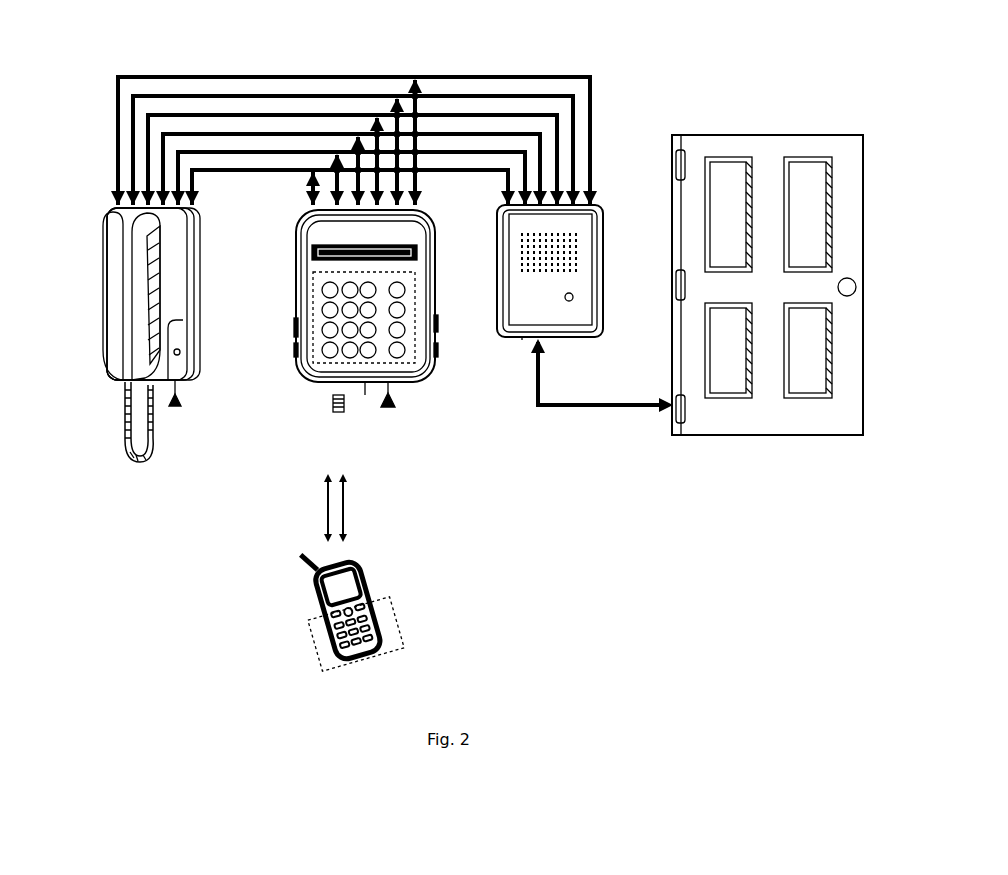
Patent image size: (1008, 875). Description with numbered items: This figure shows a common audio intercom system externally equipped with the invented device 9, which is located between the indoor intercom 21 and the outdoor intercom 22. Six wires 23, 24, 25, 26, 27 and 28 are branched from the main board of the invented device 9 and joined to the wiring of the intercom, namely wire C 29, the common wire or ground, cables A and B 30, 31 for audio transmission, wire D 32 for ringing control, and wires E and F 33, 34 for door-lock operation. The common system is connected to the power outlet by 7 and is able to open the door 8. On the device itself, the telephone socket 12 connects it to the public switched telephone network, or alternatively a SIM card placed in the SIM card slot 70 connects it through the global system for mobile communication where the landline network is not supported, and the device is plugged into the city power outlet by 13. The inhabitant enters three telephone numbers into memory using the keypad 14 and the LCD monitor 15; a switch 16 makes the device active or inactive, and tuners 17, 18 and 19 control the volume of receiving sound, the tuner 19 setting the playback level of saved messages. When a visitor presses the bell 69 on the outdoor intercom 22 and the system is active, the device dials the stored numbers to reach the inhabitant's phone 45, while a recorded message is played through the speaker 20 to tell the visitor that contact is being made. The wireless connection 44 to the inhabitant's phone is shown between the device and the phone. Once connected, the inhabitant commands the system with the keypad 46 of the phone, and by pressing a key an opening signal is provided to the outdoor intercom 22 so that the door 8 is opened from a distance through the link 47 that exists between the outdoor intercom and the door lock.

The power outlet connection 7 is at (181, 407).
The door 8 is at (716, 135).
The invented device 9 is at (303, 383).
The telephone socket 12 is at (333, 403).
The city power outlet plug 13 is at (398, 403).
The keypad 14 is at (312, 318).
The LCD monitor 15 is at (418, 252).
The switch 16 is at (438, 350).
The tuner 17 is at (295, 328).
The tuner 18 is at (295, 350).
The tuner 19 is at (438, 322).
The speaker 20 is at (578, 250).
The indoor intercom 21 is at (107, 216).
The outdoor intercom 22 is at (522, 339).
The wire 23 is at (308, 190).
The wire 24 is at (335, 150).
The wire 25 is at (357, 143).
The wire 26 is at (375, 128).
The wire 27 is at (398, 107).
The wire 28 is at (420, 186).
The wire C 29 is at (493, 170).
The cable A 30 is at (515, 148).
The cable B 31 is at (540, 130).
The wire D 32 is at (178, 115).
The wire E 33 is at (155, 96).
The wire F 34 is at (128, 77).
The wireless link 44 is at (318, 506).
The inhabitant's phone 45 is at (300, 603).
The keypad 46 is at (397, 625).
The link 47 is at (567, 407).
The bell 69 is at (574, 295).
The SIM card slot 70 is at (365, 395).